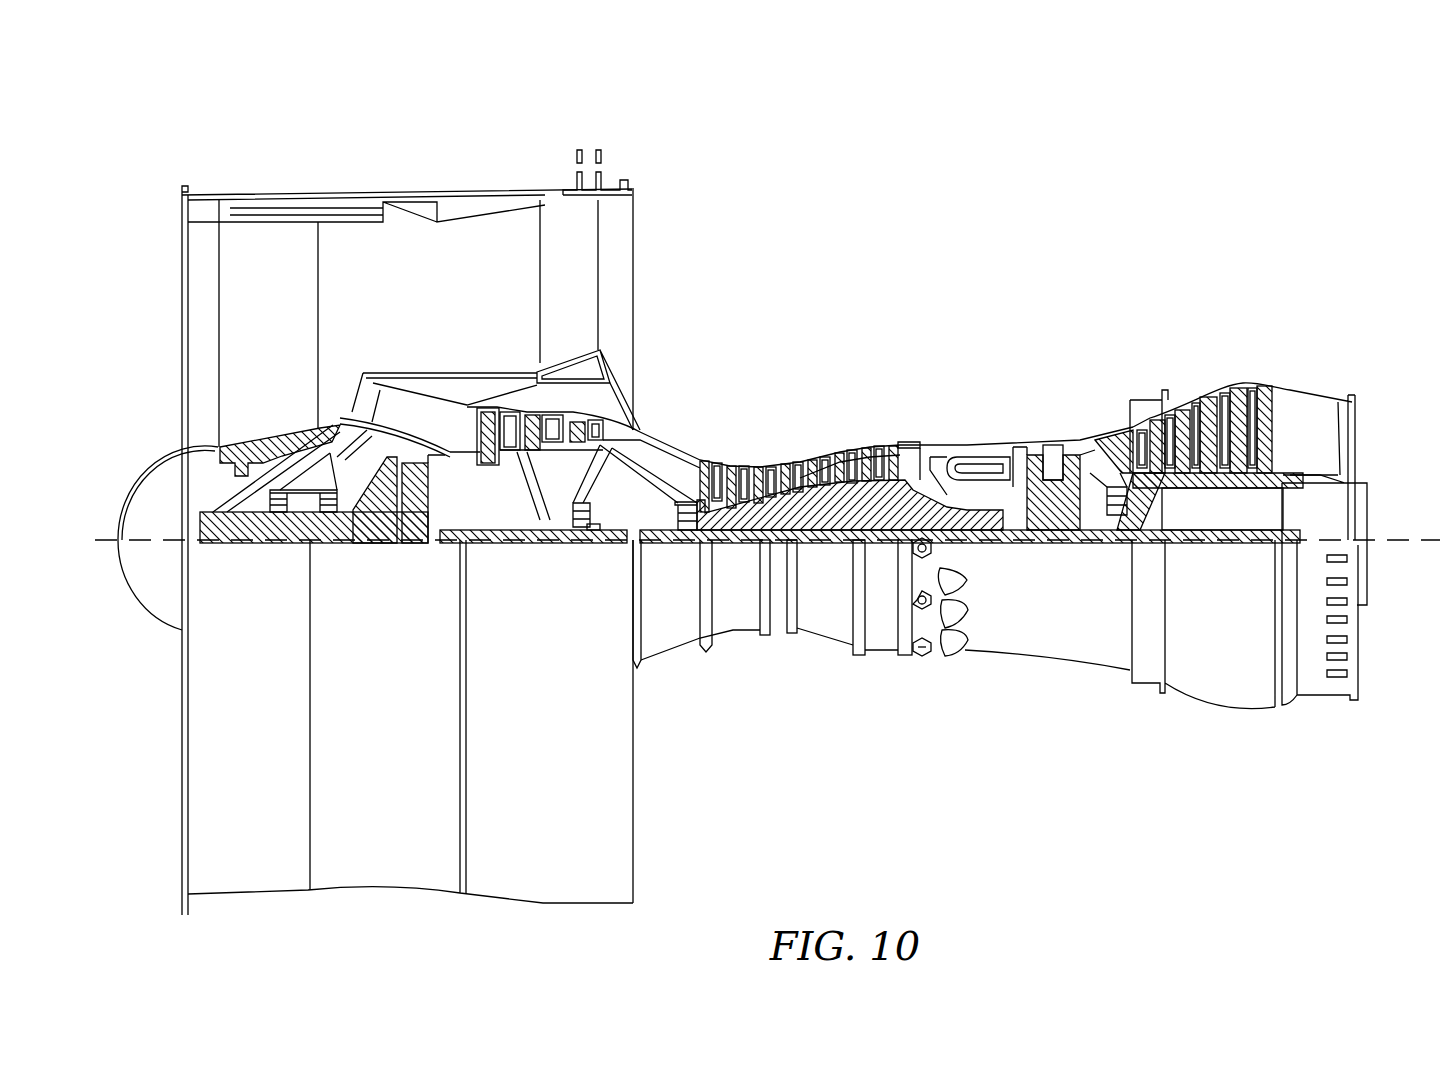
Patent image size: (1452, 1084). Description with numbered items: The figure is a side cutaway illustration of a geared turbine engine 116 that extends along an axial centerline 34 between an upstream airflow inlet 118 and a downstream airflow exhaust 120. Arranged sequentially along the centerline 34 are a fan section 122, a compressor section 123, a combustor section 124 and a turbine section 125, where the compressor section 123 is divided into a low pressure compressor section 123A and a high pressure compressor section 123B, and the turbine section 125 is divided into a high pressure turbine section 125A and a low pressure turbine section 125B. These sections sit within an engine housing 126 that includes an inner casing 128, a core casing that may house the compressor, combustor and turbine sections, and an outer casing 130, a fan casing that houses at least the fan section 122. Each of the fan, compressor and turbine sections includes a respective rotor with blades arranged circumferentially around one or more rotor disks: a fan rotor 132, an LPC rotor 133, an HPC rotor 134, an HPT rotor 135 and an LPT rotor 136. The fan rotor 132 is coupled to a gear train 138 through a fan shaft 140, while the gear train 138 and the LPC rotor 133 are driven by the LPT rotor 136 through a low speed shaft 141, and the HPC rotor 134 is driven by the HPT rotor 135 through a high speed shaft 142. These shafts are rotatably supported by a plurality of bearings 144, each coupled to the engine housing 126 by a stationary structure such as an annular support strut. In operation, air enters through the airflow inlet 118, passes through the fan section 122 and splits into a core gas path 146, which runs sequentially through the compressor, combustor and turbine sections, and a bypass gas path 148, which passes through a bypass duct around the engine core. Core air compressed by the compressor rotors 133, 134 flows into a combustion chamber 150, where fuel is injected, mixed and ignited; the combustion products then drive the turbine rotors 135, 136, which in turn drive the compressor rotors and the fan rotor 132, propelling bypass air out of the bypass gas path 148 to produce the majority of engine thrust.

The axial centerline 34 is at (1420, 545).
The geared turbine engine 116 is at (150, 176).
The airflow inlet 118 is at (182, 270).
The airflow exhaust 120 is at (1357, 428).
The fan section 122 is at (368, 164).
The compressor section 123 is at (880, 104).
The low pressure compressor (LPC) section 123A is at (635, 152).
The high pressure compressor (HPC) section 123B is at (663, 364).
The combustor section 124 is at (905, 364).
The turbine section 125 is at (1022, 292).
The high pressure turbine (HPT) section 125A is at (1022, 364).
The low pressure turbine (LPT) section 125B is at (1312, 364).
The engine housing 126 is at (652, 664).
The inner casing 128 is at (878, 543).
The outer casing 130 is at (585, 903).
The fan rotor 132 is at (220, 447).
The LPC rotor 133 is at (533, 490).
The HPC rotor 134 is at (828, 505).
The HPT rotor 135 is at (1055, 543).
The LPT rotor 136 is at (1215, 483).
The gear train 138 is at (405, 545).
The fan shaft 140 is at (262, 543).
The low speed shaft 141 is at (1224, 543).
The high speed shaft 142 is at (980, 535).
The bearings 144 is at (275, 543).
The core gas path 146 is at (658, 456).
The bypass gas path 148 is at (470, 292).
The combustion chamber 150 is at (972, 470).